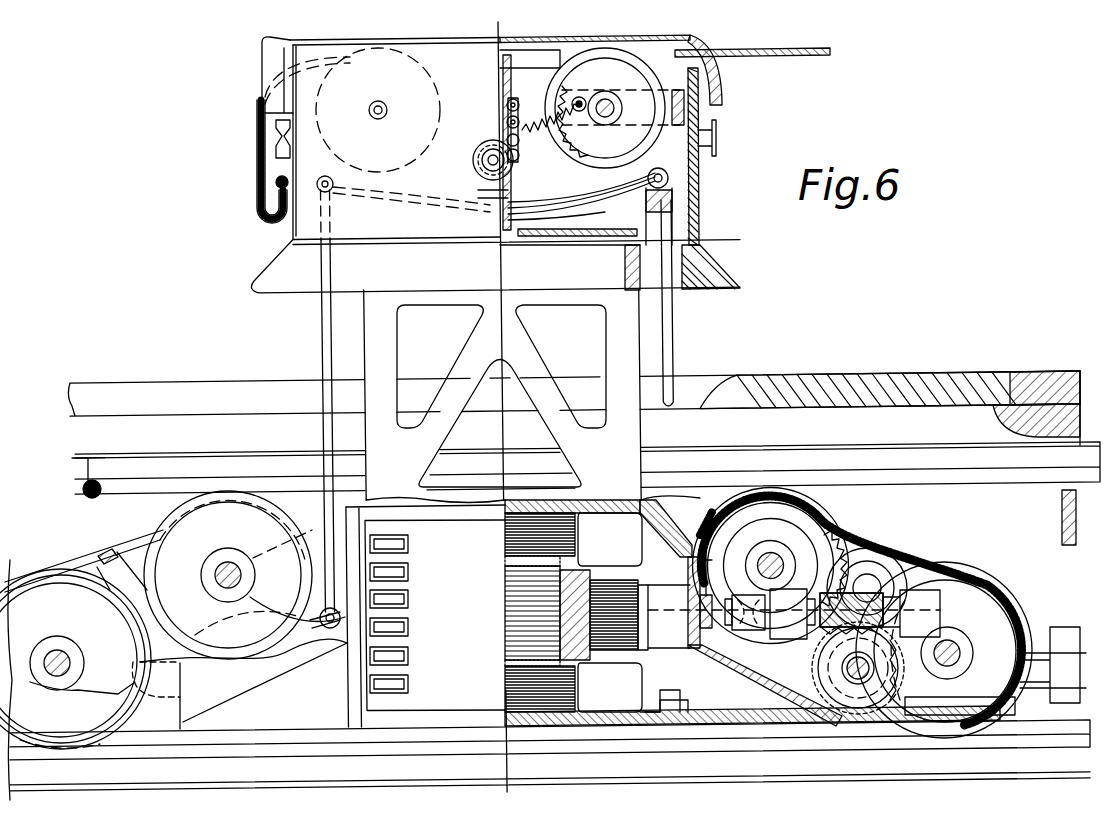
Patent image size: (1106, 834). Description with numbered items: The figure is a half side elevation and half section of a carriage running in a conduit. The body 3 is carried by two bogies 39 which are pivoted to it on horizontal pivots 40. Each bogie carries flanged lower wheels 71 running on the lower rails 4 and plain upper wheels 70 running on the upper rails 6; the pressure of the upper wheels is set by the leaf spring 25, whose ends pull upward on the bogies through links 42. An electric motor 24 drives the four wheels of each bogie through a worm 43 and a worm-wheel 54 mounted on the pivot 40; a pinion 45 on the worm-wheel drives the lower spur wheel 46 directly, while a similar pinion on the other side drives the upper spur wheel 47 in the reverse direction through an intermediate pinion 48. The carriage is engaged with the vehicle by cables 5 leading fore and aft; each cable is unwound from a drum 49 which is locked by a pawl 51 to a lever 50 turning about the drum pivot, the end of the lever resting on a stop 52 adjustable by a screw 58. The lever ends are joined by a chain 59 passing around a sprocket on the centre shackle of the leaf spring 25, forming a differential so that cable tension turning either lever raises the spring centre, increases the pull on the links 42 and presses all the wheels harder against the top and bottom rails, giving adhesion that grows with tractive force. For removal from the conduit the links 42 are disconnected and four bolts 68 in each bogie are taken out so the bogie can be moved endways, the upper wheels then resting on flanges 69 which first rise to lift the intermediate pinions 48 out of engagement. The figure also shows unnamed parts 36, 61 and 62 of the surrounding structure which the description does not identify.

The body 3 is at (673, 613).
The rails 4 is at (278, 754).
The cables 5 is at (257, 148).
The rails 6 is at (194, 462).
The electric motor 24 is at (505, 598).
The leaf spring 25 is at (558, 207).
The housing wall 36 is at (699, 180).
The bogies 39 is at (138, 545).
The horizontal pivots 40 is at (845, 665).
The links 42 is at (321, 324).
The worm 43 is at (900, 580).
The pinion 45 is at (872, 695).
The lower spur wheel 46 is at (908, 700).
The upper spur wheel 47 is at (808, 526).
The intermediate pinion 48 is at (875, 585).
The drum 49 is at (405, 172).
The lever 50 is at (528, 98).
The pawl 51 is at (598, 118).
The stop 52 is at (485, 142).
The worm-wheel 54 is at (840, 640).
The screw 58 is at (502, 74).
The chain 59 is at (525, 140).
The support 61 is at (718, 262).
The bearing 62 is at (1015, 442).
The bolts 68 is at (106, 554).
The flanges 69 is at (232, 680).
The upper wheels 70 is at (738, 505).
The lower wheels 71 is at (50, 582).